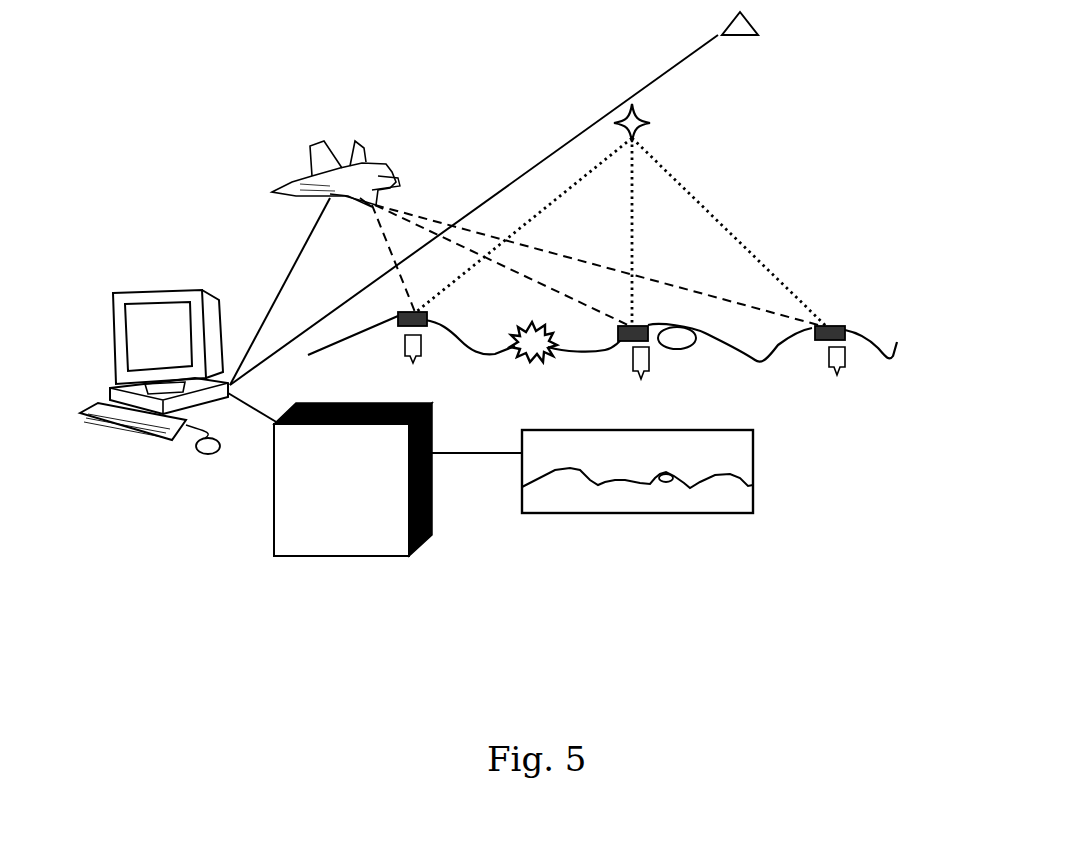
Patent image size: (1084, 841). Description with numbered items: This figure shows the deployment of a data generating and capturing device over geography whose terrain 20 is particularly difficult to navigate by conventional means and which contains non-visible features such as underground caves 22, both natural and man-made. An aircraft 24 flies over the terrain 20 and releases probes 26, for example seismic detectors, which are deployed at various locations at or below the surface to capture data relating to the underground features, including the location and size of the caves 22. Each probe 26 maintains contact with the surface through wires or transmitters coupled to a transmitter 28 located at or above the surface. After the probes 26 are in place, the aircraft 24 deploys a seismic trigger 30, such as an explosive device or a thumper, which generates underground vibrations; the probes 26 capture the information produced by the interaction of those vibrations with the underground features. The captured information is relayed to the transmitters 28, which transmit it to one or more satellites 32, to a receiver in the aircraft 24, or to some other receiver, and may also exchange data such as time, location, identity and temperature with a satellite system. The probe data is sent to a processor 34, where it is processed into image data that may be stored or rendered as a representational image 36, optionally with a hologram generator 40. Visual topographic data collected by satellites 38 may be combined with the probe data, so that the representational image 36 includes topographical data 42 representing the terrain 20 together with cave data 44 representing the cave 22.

The terrain 20 is at (875, 362).
The underground caves 22 is at (688, 348).
The aircraft 24 is at (343, 167).
The probes 26 is at (405, 352).
The transmitter 28 is at (422, 326).
The seismic trigger 30 is at (527, 328).
The satellites 32 is at (645, 136).
The processor 34 is at (166, 322).
The representational image 36 is at (545, 533).
The satellites 38 is at (734, 48).
The hologram generator 40 is at (333, 535).
The topographical data 42 is at (745, 496).
The cave data 44 is at (672, 480).